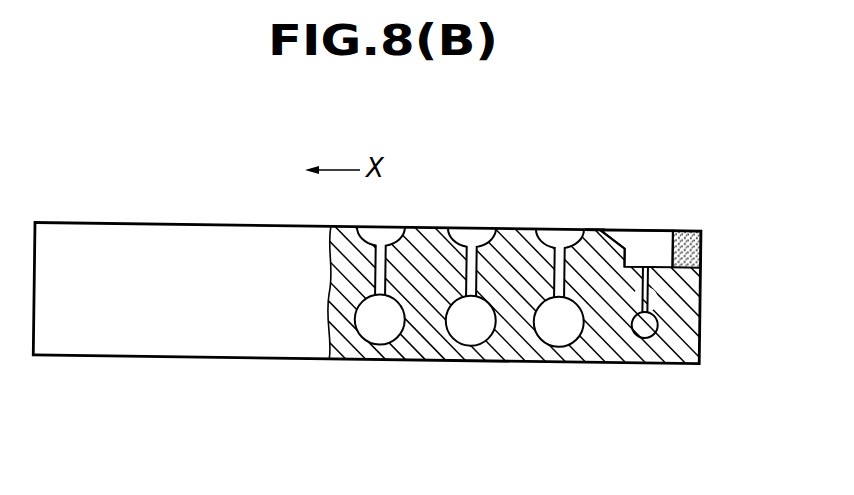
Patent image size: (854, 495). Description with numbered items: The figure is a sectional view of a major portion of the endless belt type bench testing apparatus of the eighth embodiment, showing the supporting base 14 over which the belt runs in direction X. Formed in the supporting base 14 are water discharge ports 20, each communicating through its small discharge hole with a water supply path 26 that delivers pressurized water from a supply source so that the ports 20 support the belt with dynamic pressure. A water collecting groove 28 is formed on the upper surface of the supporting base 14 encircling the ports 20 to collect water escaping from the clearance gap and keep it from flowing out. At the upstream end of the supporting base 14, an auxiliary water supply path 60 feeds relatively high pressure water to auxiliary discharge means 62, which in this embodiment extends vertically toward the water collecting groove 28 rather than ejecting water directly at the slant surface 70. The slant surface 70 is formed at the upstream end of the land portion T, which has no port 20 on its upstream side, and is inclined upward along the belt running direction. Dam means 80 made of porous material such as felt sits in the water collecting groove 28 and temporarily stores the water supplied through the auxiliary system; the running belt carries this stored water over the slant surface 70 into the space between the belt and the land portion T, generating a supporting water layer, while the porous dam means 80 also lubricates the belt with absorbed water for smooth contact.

The supporting base 14 is at (181, 218).
The water discharge port 20 is at (462, 236).
The water supply path 26 is at (555, 329).
The water collecting groove 28 is at (647, 251).
The auxiliary water supply path 60 is at (642, 334).
The auxiliary discharge means 62 is at (652, 306).
The slant surface 70 is at (622, 231).
The dam means 80 is at (690, 249).
The land portion T is at (594, 231).